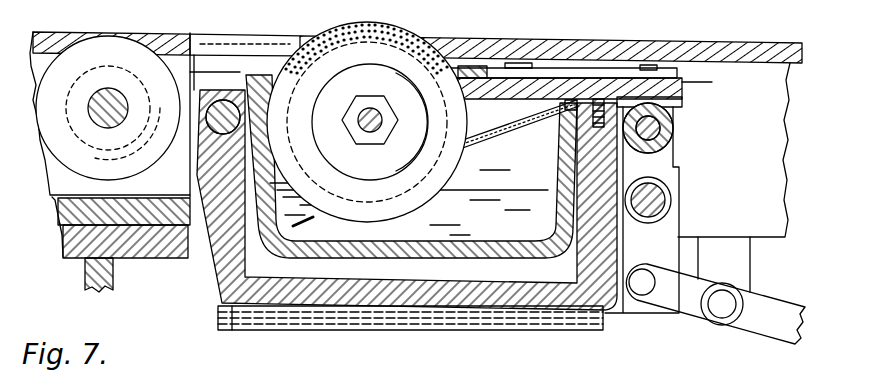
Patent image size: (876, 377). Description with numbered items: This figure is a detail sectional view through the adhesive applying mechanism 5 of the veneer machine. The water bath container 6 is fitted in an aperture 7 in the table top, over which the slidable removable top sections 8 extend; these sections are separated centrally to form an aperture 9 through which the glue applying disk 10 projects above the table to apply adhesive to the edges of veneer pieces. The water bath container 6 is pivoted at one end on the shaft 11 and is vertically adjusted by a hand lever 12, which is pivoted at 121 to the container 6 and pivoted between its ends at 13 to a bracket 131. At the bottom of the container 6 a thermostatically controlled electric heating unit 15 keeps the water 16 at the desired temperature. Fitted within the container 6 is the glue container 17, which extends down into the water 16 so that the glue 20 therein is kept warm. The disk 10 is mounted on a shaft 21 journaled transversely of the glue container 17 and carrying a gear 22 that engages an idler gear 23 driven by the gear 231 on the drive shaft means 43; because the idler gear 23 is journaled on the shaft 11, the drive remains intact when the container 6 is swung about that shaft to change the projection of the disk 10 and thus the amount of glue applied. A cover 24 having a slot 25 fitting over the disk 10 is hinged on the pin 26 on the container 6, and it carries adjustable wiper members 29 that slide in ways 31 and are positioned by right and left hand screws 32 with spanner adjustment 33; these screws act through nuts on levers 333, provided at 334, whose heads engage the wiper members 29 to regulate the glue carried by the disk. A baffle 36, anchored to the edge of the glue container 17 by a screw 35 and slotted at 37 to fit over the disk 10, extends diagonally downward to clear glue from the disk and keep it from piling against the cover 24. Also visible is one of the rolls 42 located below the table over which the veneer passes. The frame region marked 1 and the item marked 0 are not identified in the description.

The slidable removable top sections 8 is at (37, 60).
The roll 42 is at (107, 48).
The drive shaft means 43 is at (113, 92).
The gear 231 is at (90, 160).
The shaft 11 is at (221, 105).
The aperture 7 is at (256, 62).
The aperture 9 is at (303, 42).
The glue applying disk 10 is at (427, 42).
The adjustable wiper members 29 is at (478, 68).
The ways 31 is at (498, 70).
The lever pivot 334 is at (526, 65).
The cover 24 is at (580, 84).
The levers 333 is at (630, 75).
The rail end 0 is at (749, 54).
The glue 20 is at (381, 48).
The shaft 21 is at (368, 131).
The slot 25 is at (468, 96).
The screw 35 is at (600, 121).
The baffle 36 is at (509, 132).
The right and left hand screws 32 is at (677, 122).
The spanner adjustment 33 is at (670, 135).
The pin 26 is at (654, 205).
The slot 37 is at (304, 221).
The gear 22 is at (424, 198).
The idler gear 23 is at (153, 266).
The adhesive applying mechanism 5 is at (217, 268).
The water bath container 6 is at (219, 295).
The thermostatically controlled electric heating unit 15 is at (408, 324).
The glue container 17 is at (497, 256).
The water 16 is at (553, 277).
The pivot 121 is at (643, 291).
The hand lever 12 is at (686, 304).
The pivot 13 is at (723, 309).
The bracket 131 is at (738, 270).
The frame 1 is at (768, 230).